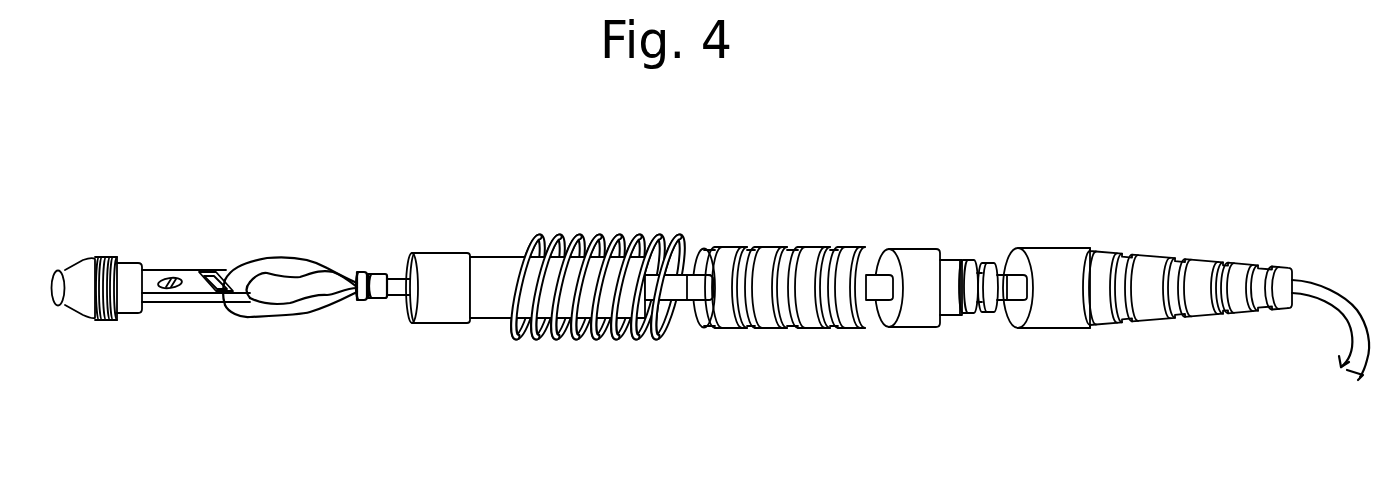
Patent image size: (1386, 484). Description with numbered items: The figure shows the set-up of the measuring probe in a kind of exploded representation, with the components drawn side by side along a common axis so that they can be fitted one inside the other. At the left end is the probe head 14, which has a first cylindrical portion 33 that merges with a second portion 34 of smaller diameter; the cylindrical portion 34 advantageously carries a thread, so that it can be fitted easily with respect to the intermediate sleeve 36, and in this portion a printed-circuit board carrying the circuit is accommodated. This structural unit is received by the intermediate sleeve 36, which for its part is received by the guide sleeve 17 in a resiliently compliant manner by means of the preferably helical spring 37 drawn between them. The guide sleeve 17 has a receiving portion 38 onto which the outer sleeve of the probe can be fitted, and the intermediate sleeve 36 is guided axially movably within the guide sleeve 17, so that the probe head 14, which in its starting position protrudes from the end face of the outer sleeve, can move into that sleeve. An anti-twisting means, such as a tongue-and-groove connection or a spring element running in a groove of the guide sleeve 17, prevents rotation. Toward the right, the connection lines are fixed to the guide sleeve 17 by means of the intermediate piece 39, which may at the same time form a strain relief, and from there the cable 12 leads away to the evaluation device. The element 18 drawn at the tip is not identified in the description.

The cable 12 is at (1323, 292).
The probe head 14 is at (65, 322).
The guide sleeve 17 is at (793, 313).
The sensor tip 18 is at (82, 283).
The first cylindrical portion 33 is at (105, 248).
The second portion 34 is at (130, 240).
The intermediate sleeve 36 is at (442, 267).
The helical spring 37 is at (563, 337).
The receiving portion 38 is at (713, 248).
The intermediate piece 39 is at (920, 310).